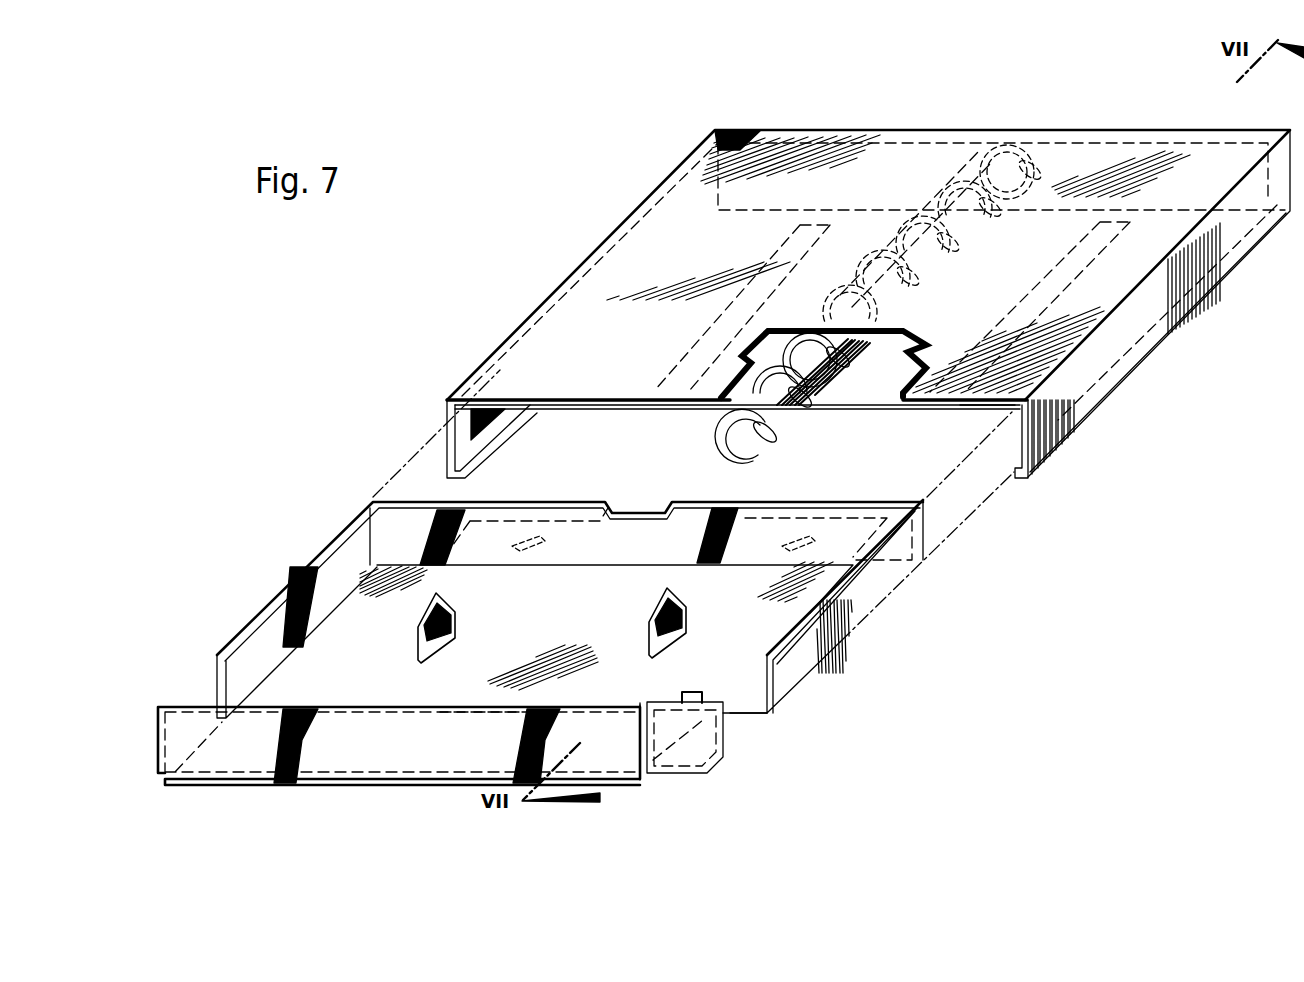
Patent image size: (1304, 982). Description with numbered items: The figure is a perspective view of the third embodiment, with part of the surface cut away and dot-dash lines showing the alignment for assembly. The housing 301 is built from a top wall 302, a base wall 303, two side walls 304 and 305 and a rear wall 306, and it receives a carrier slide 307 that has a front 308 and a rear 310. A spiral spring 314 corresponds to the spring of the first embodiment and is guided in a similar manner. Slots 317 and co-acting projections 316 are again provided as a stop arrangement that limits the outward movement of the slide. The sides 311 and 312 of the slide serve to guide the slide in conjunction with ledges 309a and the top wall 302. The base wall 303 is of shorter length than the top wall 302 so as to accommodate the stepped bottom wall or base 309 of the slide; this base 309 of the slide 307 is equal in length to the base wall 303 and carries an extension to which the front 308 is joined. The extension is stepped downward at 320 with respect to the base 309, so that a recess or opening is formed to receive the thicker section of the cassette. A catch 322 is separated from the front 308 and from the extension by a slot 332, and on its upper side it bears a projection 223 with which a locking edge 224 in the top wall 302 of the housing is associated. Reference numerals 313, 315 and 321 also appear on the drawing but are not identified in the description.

The housing 301 is at (868, 283).
The top wall 302 is at (873, 281).
The base wall 303 is at (823, 387).
The side wall 304 is at (1160, 315).
The side wall 305 is at (503, 439).
The rear wall 306 is at (945, 143).
The carrier slide 307 is at (570, 587).
The front 308 is at (399, 725).
The base 309 is at (596, 626).
The ledges 309a is at (779, 453).
The rear 310 is at (579, 512).
The side 311 is at (856, 606).
The side 312 is at (339, 607).
The retaining clip 313 is at (577, 617).
The spiral spring 314 is at (718, 436).
The binder ring 315 is at (898, 278).
The projections 316 is at (666, 533).
The slots 317 is at (891, 271).
The step 320 is at (781, 726).
The slot in base plate 321 is at (472, 707).
The catch 322 is at (720, 741).
The slot 332 is at (617, 741).
The projection 223 is at (715, 677).
The locking edge 224 is at (985, 425).